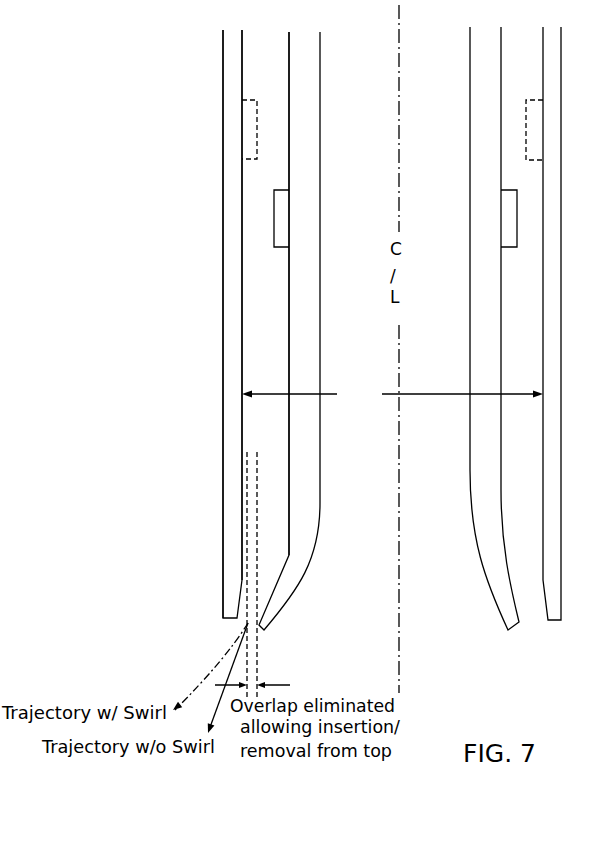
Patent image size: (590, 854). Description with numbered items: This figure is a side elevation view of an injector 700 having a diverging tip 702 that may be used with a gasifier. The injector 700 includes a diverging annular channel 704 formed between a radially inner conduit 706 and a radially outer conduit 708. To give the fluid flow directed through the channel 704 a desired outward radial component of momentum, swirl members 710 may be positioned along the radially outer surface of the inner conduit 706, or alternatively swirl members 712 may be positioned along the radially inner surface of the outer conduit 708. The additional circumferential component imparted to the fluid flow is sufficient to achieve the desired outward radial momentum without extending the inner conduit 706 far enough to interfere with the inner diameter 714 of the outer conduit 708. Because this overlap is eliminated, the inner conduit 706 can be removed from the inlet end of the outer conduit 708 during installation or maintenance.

The injector 700 is at (137, 115).
The diverging tip 702 is at (204, 578).
The diverging annular channel 704 is at (263, 303).
The radially inner conduit 706 is at (306, 350).
The radially outer conduit 708 is at (233, 252).
The swirl members 710 is at (283, 222).
The swirl members 712 is at (252, 132).
The inner diameter 714 is at (392, 394).